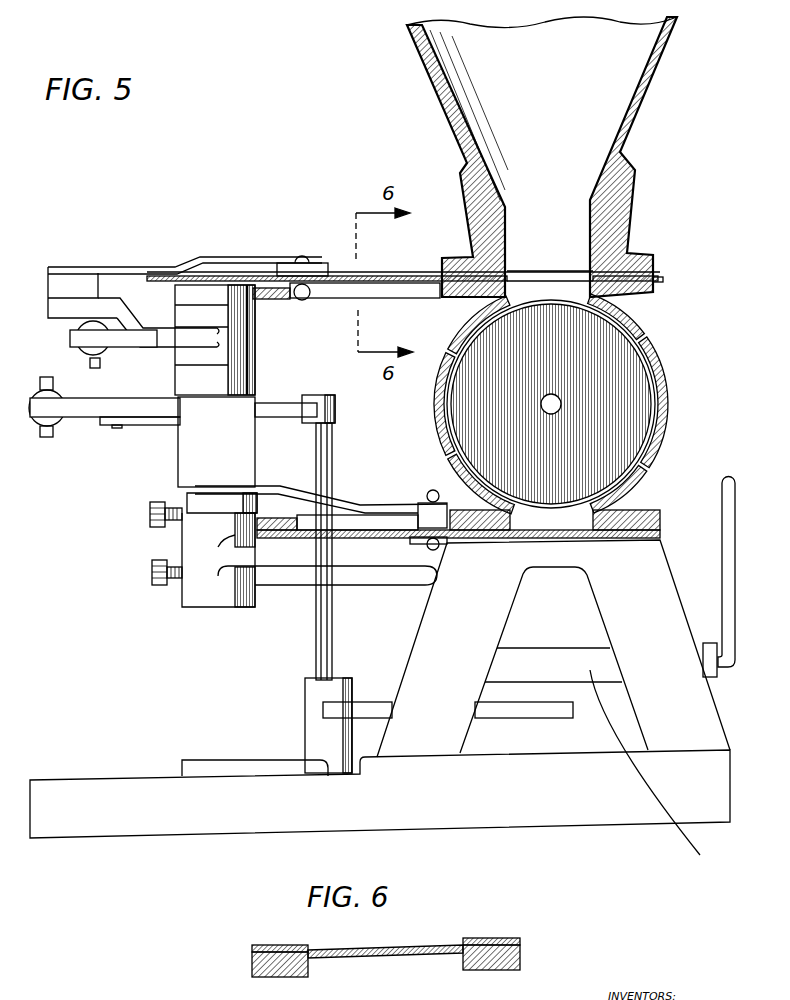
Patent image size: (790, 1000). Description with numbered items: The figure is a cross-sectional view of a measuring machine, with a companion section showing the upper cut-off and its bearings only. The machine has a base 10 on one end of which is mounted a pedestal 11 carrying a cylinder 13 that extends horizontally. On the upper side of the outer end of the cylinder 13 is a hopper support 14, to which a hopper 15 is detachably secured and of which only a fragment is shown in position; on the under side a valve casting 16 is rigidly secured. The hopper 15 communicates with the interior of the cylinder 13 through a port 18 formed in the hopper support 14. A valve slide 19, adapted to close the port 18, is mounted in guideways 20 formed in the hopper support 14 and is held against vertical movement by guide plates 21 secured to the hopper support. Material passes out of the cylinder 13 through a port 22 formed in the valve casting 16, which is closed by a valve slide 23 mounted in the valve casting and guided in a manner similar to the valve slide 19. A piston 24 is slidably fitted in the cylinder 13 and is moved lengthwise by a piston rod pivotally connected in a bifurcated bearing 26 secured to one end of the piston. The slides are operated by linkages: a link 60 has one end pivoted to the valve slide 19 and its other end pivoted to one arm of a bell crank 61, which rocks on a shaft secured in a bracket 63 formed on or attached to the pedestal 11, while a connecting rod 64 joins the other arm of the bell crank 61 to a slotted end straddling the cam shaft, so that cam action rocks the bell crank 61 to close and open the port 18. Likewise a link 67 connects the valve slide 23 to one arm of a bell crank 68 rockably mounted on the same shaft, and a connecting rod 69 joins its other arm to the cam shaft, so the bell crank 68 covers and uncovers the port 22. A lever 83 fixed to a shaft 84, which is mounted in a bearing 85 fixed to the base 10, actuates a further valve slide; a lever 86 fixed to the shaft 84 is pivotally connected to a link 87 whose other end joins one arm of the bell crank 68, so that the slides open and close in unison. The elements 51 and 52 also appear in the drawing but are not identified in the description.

In FIG. 5, the base 10 is at (125, 833).
In FIG. 5, the pedestal 11 is at (698, 710).
In FIG. 5, the cylinder 13 is at (660, 415).
In FIG. 5, the hopper support 14 is at (653, 327).
In FIG. 5, the hopper 15 is at (630, 96).
In FIG. 5, the valve casting 16 is at (650, 487).
In FIG. 5, the port 18 is at (663, 280).
In FIG. 5, the valve slide 19 is at (410, 270).
In FIG. 6, the guideways 20 is at (463, 955).
In FIG. 5, the guide plates 21 is at (340, 267).
In FIG. 6, the guide plates 21 is at (270, 945).
In FIG. 5, the port 22 is at (661, 512).
In FIG. 5, the valve slide 23 is at (563, 538).
In FIG. 5, the piston 24 is at (630, 385).
In FIG. 5, the bifurcated bearing 26 is at (541, 403).
In FIG. 5, the leader 51 is at (649, 771).
In FIG. 5, the guard rod 52 is at (736, 492).
In FIG. 5, the link 60 is at (175, 266).
In FIG. 5, the bell crank 61 is at (157, 337).
In FIG. 5, the bracket 63 is at (210, 578).
In FIG. 5, the connecting rod 64 is at (88, 358).
In FIG. 5, the link 67 is at (365, 503).
In FIG. 5, the bell crank 68 is at (210, 460).
In FIG. 5, the connecting rod 69 is at (47, 438).
In FIG. 5, the lever 83 is at (320, 695).
In FIG. 5, the shaft 84 is at (318, 637).
In FIG. 5, the bearing 85 is at (196, 760).
In FIG. 5, the lever 86 is at (270, 400).
In FIG. 5, the link 87 is at (155, 426).